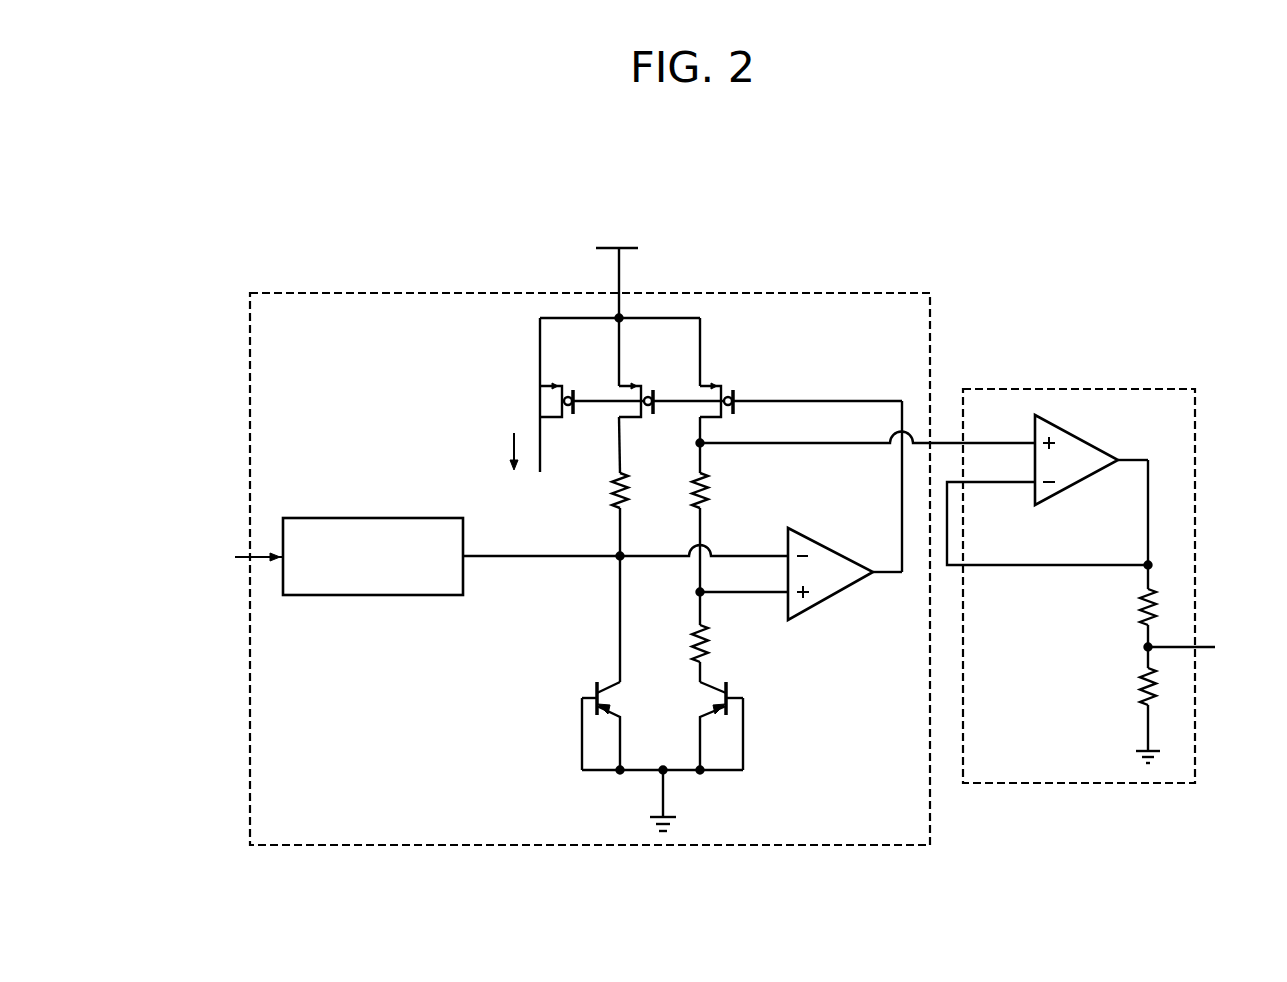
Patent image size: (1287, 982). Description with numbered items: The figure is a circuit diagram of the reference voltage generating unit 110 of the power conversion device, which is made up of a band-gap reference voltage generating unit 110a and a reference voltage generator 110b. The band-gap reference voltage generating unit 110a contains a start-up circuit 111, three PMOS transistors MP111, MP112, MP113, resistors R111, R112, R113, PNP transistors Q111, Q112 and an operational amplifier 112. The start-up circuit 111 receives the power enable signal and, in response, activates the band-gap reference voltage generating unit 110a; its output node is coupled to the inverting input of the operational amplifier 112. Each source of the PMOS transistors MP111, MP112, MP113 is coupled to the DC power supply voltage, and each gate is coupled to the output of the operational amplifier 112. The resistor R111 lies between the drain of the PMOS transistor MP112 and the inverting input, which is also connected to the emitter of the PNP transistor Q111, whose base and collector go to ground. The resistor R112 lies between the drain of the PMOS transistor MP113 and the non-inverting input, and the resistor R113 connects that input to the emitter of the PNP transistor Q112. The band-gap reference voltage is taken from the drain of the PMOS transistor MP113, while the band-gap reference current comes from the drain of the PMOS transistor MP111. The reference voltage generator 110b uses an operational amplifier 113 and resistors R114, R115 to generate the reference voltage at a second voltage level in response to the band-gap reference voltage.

The reference voltage generating unit 110 is at (733, 134).
The band-gap reference voltage generating unit 110a is at (782, 292).
The reference voltage generator 110b is at (1075, 389).
The start-up circuit 111 is at (373, 595).
The operational amplifier 112 is at (828, 598).
The operational amplifier 113 is at (1076, 488).
The PMOS transistor MP111 is at (531, 395).
The PMOS transistor MP112 is at (653, 395).
The PMOS transistor MP113 is at (734, 395).
The resistor R111 is at (594, 490).
The resistor R112 is at (726, 490).
The resistor R113 is at (727, 643).
The resistor R114 is at (1119, 607).
The resistor R115 is at (1119, 686).
The PNP transistor Q111 is at (573, 726).
The PNP transistor Q112 is at (700, 726).